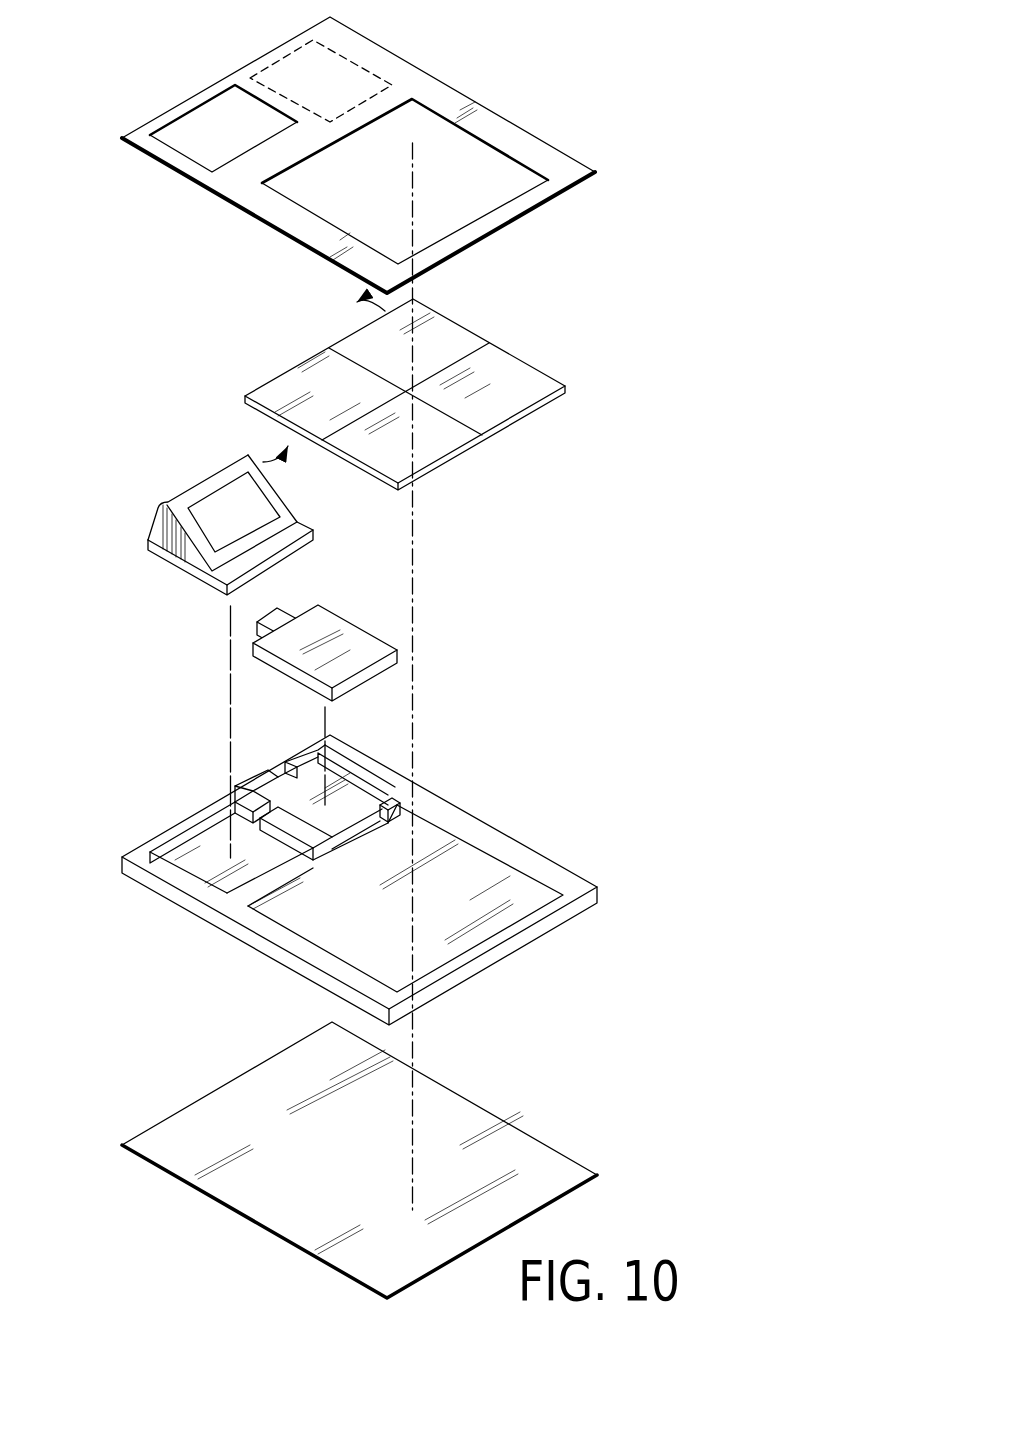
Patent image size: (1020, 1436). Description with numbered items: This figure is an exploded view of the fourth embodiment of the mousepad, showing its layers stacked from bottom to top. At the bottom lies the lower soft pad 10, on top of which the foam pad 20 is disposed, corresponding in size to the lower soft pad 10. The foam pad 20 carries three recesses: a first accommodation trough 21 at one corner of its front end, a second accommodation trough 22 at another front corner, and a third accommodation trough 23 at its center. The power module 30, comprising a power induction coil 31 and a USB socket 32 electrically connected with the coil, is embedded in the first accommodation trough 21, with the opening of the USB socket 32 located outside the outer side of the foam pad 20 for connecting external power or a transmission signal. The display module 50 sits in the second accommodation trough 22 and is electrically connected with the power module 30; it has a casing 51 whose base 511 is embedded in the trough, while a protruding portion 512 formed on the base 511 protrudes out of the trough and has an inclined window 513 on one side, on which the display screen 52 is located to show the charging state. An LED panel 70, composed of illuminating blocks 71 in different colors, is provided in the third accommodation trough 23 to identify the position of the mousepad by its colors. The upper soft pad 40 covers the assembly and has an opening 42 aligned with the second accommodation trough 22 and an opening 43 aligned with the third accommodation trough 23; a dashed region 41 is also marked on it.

The lower soft pad 10 is at (530, 1133).
The foam pad 20 is at (344, 867).
The first accommodation trough 21 is at (357, 800).
The second accommodation trough 22 is at (187, 858).
The third accommodation trough 23 is at (318, 912).
The power module 30 is at (310, 671).
The power induction coil 31 is at (357, 642).
The USB socket 32 is at (257, 625).
The upper soft pad 40 is at (350, 155).
The marked region 41 is at (282, 60).
The opening 42 is at (195, 138).
The opening 43 is at (460, 197).
The display module 50 is at (216, 502).
The casing 51 is at (188, 502).
The base 511 is at (207, 577).
The protruding portion 512 is at (178, 503).
The inclined window 513 is at (218, 485).
The display screen 52 is at (255, 503).
The LED panel 70 is at (459, 394).
The illuminating blocks 71 is at (493, 412).